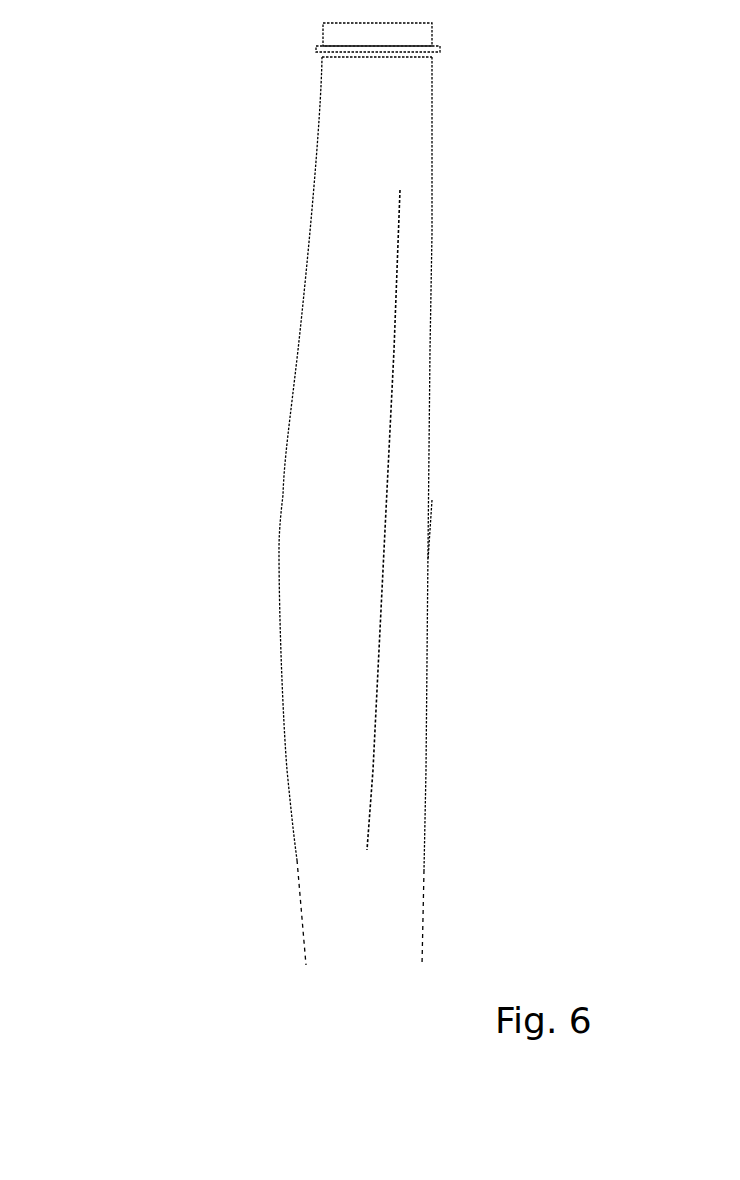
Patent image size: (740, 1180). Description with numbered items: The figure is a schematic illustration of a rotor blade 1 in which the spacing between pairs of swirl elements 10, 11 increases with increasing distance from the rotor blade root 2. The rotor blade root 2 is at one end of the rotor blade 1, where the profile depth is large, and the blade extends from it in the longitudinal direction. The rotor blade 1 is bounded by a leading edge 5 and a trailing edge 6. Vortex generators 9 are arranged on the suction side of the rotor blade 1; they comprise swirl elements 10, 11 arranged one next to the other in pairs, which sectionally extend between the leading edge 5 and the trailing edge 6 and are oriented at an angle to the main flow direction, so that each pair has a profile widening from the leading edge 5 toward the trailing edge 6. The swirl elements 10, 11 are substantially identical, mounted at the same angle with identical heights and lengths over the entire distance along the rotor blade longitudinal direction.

The rotor blade 1 is at (346, 490).
The rotor blade root 2 is at (350, 34).
The leading edge 5 is at (432, 233).
The trailing edge 6 is at (283, 493).
The vortex generators 9 is at (428, 540).
The swirl element 10 is at (508, 520).
The swirl element 11 is at (392, 397).